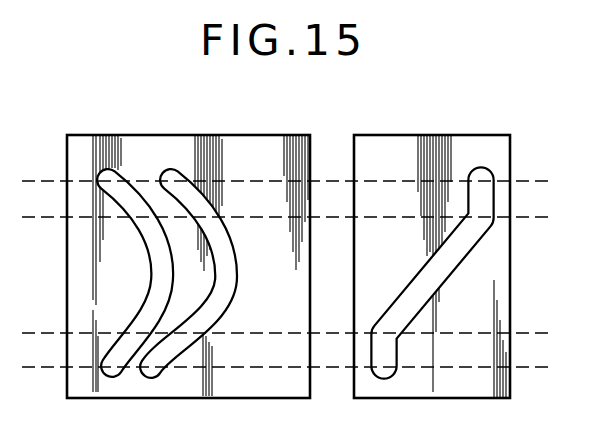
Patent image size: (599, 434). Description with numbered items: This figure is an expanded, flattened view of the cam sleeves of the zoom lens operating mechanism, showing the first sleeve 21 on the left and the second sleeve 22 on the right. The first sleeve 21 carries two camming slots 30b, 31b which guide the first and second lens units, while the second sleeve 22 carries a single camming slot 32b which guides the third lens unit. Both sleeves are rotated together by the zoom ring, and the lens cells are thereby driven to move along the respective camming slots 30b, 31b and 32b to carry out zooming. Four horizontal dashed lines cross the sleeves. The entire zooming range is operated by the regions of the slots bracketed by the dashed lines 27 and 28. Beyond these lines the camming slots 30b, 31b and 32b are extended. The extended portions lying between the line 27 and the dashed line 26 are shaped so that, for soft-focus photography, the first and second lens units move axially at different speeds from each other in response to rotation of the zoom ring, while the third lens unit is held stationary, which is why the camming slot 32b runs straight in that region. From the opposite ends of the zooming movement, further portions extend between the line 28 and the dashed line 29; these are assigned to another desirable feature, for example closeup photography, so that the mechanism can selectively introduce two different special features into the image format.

The first sleeve 21 is at (273, 134).
The second sleeve 22 is at (471, 134).
The dashed line 26 is at (24, 181).
The dashed line 27 is at (45, 217).
The dashed line 28 is at (25, 333).
The dashed line 29 is at (50, 367).
The camming slot 30b is at (152, 269).
The camming slot 31b is at (238, 274).
The camming slot 32b is at (455, 261).